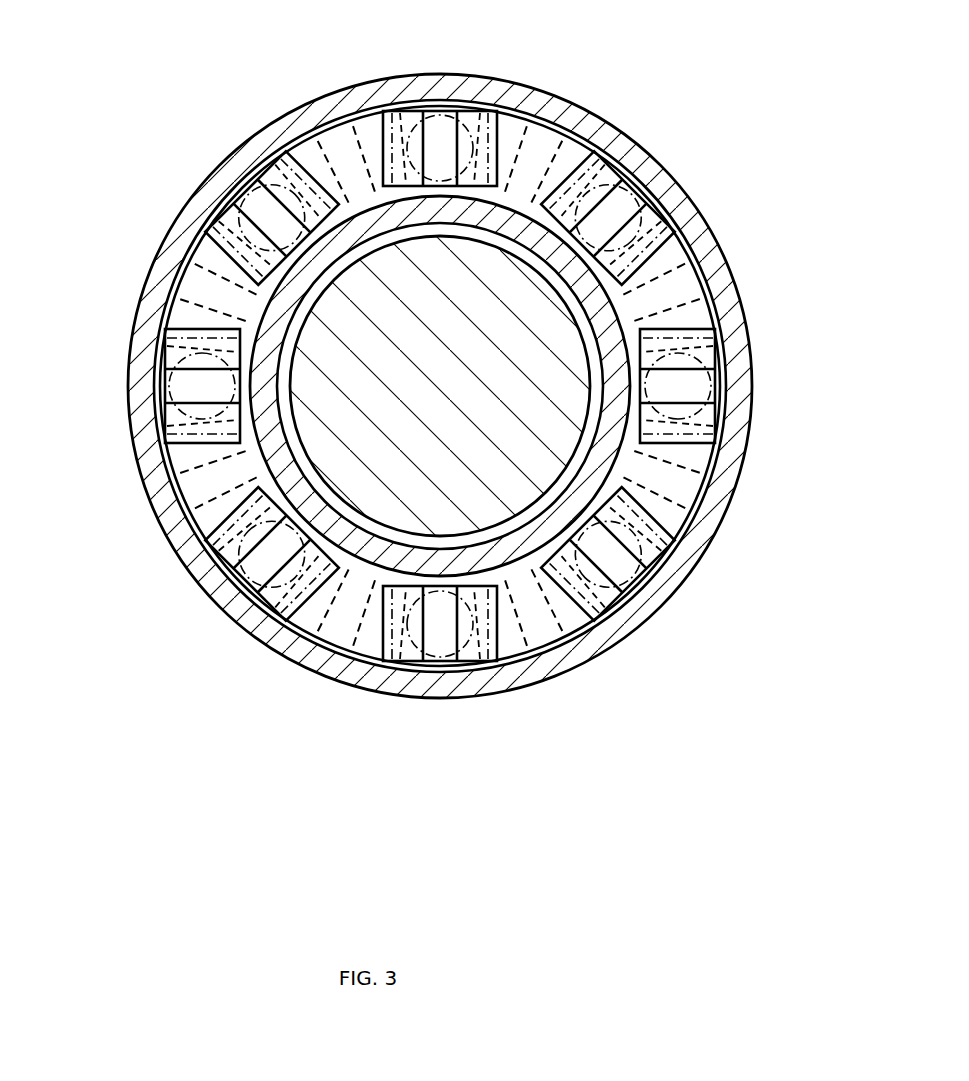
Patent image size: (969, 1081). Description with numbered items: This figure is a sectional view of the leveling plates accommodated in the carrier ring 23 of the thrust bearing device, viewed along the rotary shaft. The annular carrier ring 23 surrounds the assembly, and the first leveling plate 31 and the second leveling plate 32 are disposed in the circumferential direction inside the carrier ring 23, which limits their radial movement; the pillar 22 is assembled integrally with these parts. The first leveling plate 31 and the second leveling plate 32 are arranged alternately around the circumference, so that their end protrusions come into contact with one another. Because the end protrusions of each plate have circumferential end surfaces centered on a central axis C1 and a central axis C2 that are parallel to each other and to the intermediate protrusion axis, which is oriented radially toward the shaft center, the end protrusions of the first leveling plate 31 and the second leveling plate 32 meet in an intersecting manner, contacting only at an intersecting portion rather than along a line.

The pillar 22 is at (405, 112).
The carrier ring 23 is at (203, 180).
The first leveling plate 31 is at (442, 110).
The second leveling plate 32 is at (533, 130).
The central axis of the end circumferential surface of the end protrusion C1 is at (575, 152).
The central axis of the end circumferential surface of the other end protrusion C2 is at (640, 215).